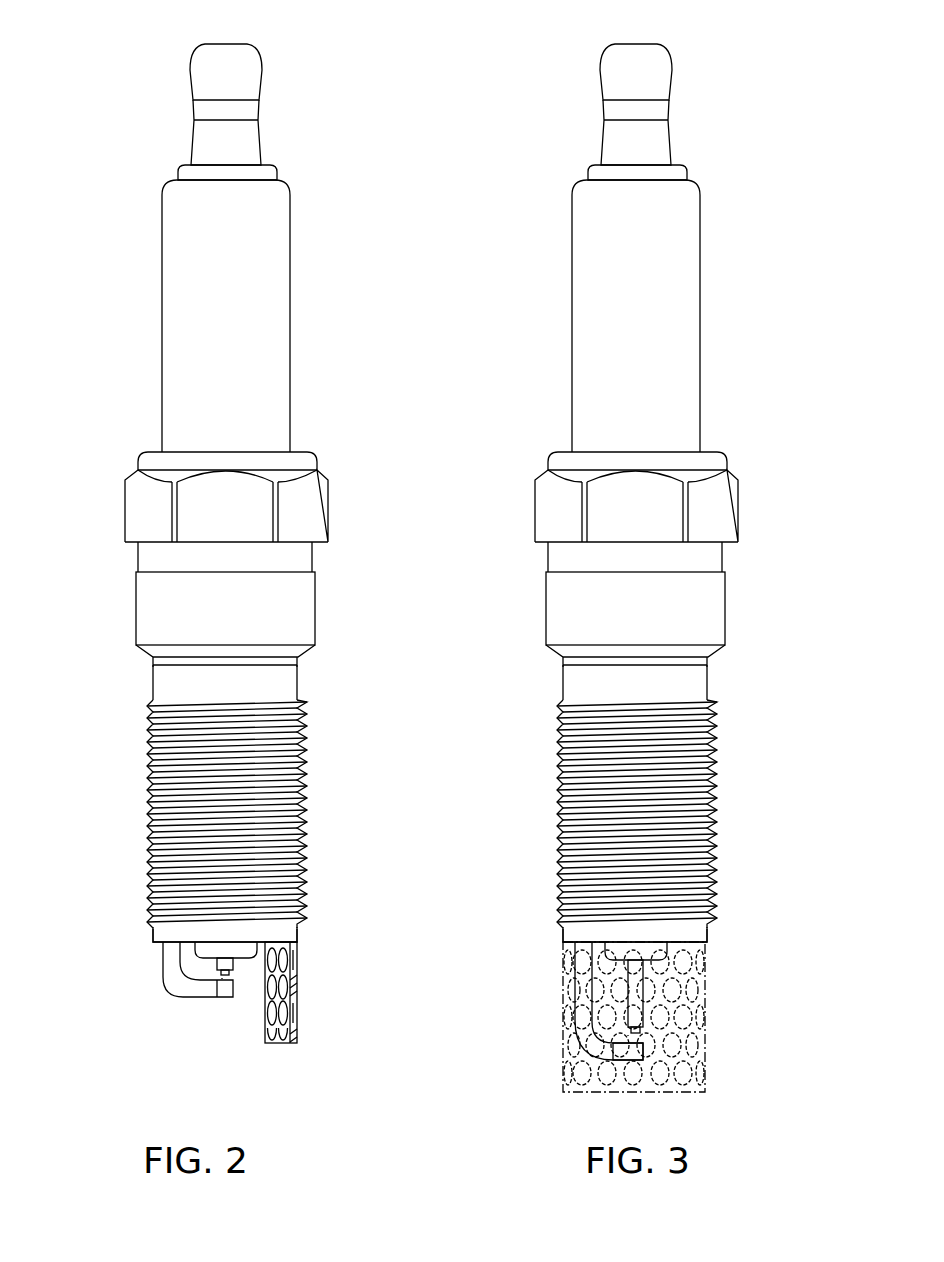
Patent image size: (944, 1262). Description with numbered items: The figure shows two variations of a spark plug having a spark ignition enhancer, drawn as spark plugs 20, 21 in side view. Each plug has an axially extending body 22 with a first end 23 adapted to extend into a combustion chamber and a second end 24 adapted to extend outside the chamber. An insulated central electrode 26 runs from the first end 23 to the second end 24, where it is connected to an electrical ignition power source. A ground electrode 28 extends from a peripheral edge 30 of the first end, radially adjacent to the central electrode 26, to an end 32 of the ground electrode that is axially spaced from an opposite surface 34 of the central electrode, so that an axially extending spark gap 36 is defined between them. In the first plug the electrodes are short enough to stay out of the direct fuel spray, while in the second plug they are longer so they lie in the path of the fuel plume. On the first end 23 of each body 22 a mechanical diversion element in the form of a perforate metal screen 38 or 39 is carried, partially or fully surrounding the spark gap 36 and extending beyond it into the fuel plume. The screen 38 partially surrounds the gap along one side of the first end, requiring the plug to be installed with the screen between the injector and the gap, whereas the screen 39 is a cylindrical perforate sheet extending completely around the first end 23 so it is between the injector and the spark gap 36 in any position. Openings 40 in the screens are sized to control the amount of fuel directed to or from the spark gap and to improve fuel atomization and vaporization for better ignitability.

In FIG. 2, the spark plug 20 is at (324, 455).
In FIG. 3, the spark plug 21 is at (734, 455).
In FIG. 2, the body 22 is at (318, 607).
In FIG. 3, the body 22 is at (728, 607).
In FIG. 2, the first end 23 is at (167, 934).
In FIG. 3, the first end 23 is at (575, 934).
In FIG. 2, the second end 24 is at (228, 43).
In FIG. 3, the second end 24 is at (638, 43).
In FIG. 2, the central electrode 26 is at (217, 965).
In FIG. 3, the central electrode 26 is at (625, 987).
In FIG. 2, the ground electrode 28 is at (162, 957).
In FIG. 3, the ground electrode 28 is at (568, 1022).
In FIG. 2, the peripheral edge 30 is at (158, 944).
In FIG. 3, the peripheral edge 30 is at (566, 944).
In FIG. 2, the end of the ground electrode 32 is at (240, 993).
In FIG. 3, the end of the ground electrode 32 is at (635, 1053).
In FIG. 2, the opposite surface 34 is at (237, 974).
In FIG. 3, the opposite surface 34 is at (640, 1033).
In FIG. 2, the spark gap 36 is at (222, 978).
In FIG. 3, the spark gap 36 is at (628, 1036).
In FIG. 2, the perforate metal screen 38 is at (297, 1038).
In FIG. 3, the perforate metal screen 39 is at (707, 1057).
In FIG. 2, the openings 40 is at (272, 960).
In FIG. 3, the openings 40 is at (697, 960).